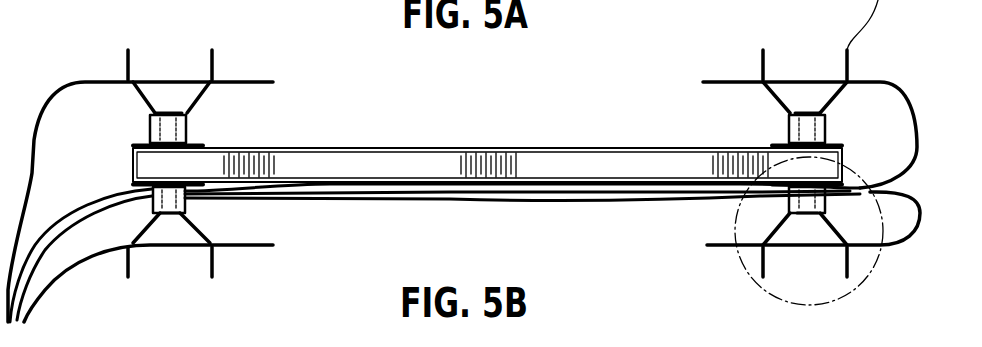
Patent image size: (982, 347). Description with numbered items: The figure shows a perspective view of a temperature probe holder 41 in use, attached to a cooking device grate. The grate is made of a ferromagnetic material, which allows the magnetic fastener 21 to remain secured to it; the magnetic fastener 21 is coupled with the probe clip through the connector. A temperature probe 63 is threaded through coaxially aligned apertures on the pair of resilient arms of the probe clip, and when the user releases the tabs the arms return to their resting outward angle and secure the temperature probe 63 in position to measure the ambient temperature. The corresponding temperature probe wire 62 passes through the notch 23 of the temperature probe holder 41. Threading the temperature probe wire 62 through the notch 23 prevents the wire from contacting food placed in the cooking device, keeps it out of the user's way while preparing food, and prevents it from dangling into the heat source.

The magnetic fastener 21 is at (787, 134).
The notch 23 is at (182, 200).
The temperature probe holder 41 is at (838, 303).
The temperature probe wire 62 is at (97, 200).
The temperature probe 63 is at (247, 82).